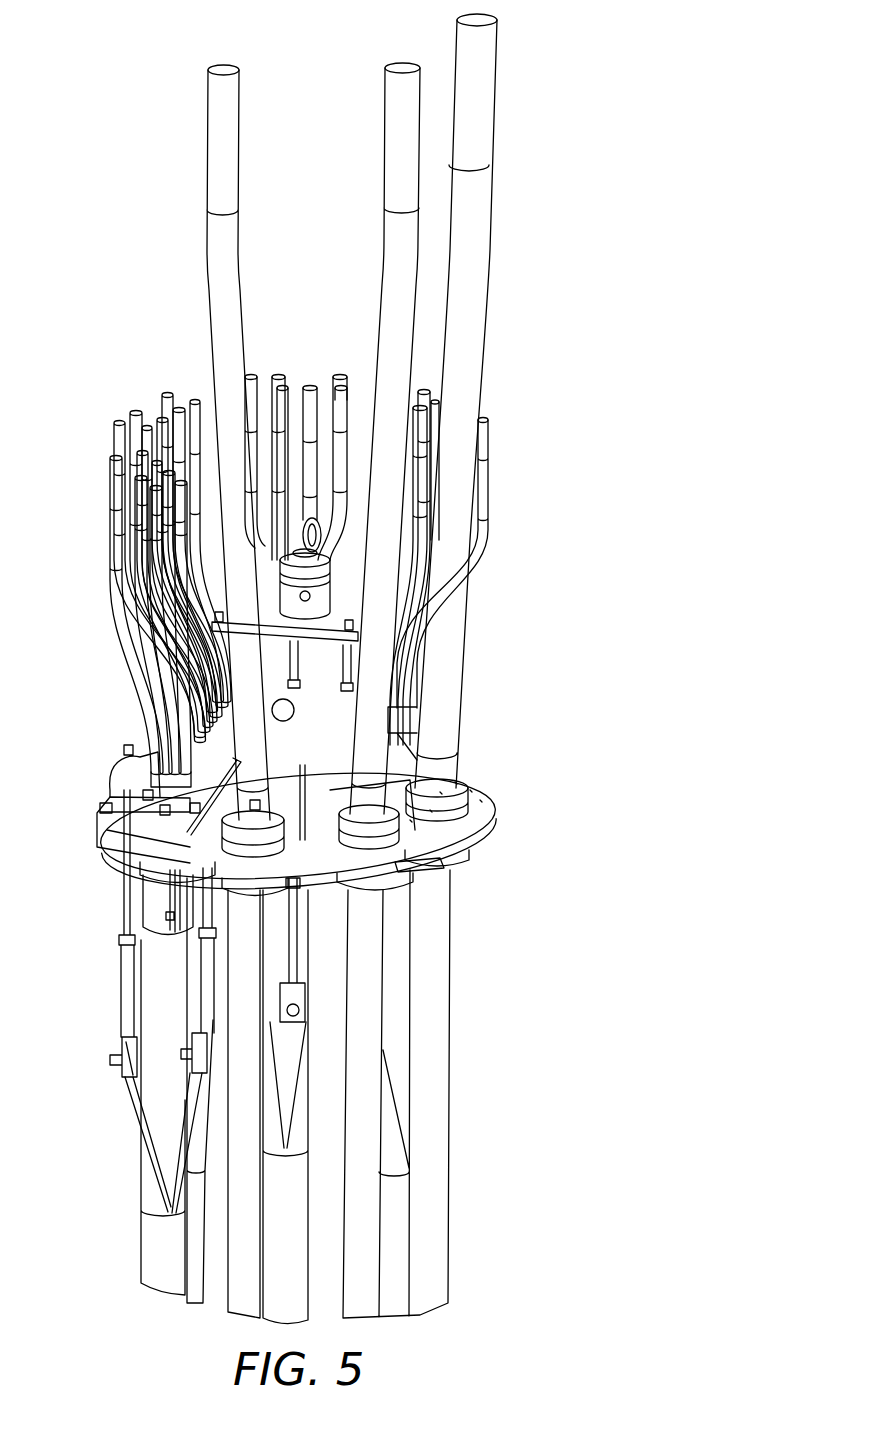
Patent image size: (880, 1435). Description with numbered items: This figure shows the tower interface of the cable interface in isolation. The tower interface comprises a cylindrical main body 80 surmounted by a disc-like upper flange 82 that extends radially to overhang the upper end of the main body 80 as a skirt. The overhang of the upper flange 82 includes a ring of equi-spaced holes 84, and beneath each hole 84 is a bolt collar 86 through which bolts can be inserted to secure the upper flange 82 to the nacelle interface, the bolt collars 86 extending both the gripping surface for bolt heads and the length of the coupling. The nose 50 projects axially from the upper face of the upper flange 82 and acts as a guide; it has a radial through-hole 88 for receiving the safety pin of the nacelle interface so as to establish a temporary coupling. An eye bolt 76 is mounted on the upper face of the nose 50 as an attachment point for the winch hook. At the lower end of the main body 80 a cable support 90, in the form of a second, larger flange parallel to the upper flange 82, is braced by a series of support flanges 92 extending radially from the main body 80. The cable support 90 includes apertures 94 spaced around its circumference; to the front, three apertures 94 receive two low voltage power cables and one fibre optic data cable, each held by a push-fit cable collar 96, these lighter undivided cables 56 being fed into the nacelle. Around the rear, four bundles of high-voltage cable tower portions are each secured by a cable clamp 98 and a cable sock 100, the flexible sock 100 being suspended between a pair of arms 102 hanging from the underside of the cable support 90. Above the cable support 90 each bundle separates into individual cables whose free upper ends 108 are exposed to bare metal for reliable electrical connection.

The nose 50 is at (287, 587).
The undivided cables 56 is at (390, 298).
The eye bolt 76 is at (320, 537).
The main body 80 is at (273, 682).
The upper flange 82 is at (285, 631).
The holes 84 is at (296, 637).
The bolt collar 86 is at (296, 688).
The radial through-hole 88 is at (312, 600).
The cable support 90 is at (488, 776).
The support flanges 92 is at (227, 800).
The apertures 94 is at (193, 850).
The cable collar 96 is at (423, 860).
The cable clamp 98 is at (152, 898).
The cable sock 100 is at (128, 1098).
The arms 102 is at (126, 985).
The free upper ends 108 is at (108, 467).